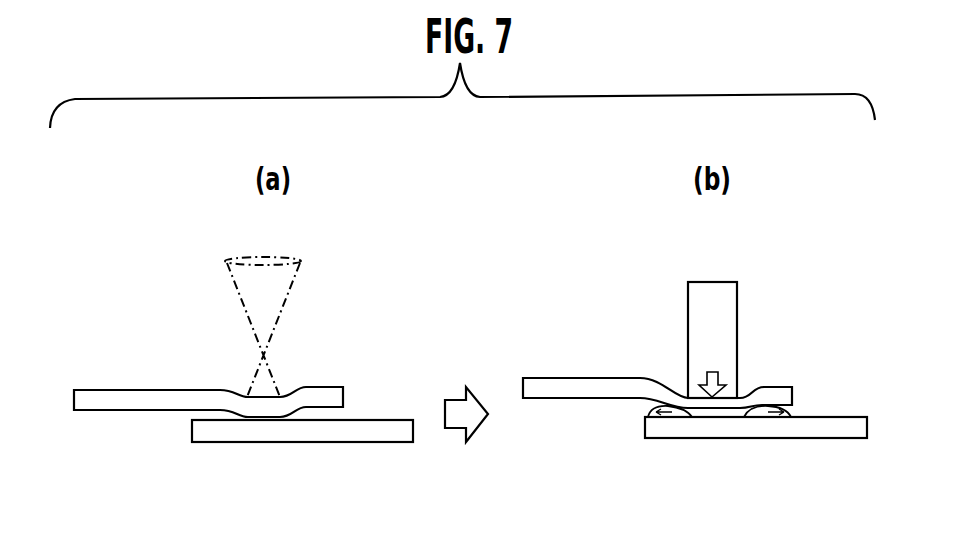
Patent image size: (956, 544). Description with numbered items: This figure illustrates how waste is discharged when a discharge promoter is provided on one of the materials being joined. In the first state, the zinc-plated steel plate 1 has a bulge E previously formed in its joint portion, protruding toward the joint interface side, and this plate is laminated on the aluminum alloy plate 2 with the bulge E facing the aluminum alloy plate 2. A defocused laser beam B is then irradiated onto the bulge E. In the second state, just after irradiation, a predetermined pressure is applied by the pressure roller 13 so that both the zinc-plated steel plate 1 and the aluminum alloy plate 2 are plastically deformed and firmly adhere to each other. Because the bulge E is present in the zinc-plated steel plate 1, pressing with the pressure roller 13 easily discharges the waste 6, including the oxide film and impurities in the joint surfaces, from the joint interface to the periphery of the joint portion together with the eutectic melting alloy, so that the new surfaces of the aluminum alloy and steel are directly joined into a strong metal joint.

The zinc-plated steel plate 1 is at (98, 395).
The aluminum alloy plate 2 is at (396, 426).
The laser beam B is at (293, 287).
The bulge E is at (270, 409).
The pressure roller 13 is at (736, 318).
The waste 6 is at (788, 412).